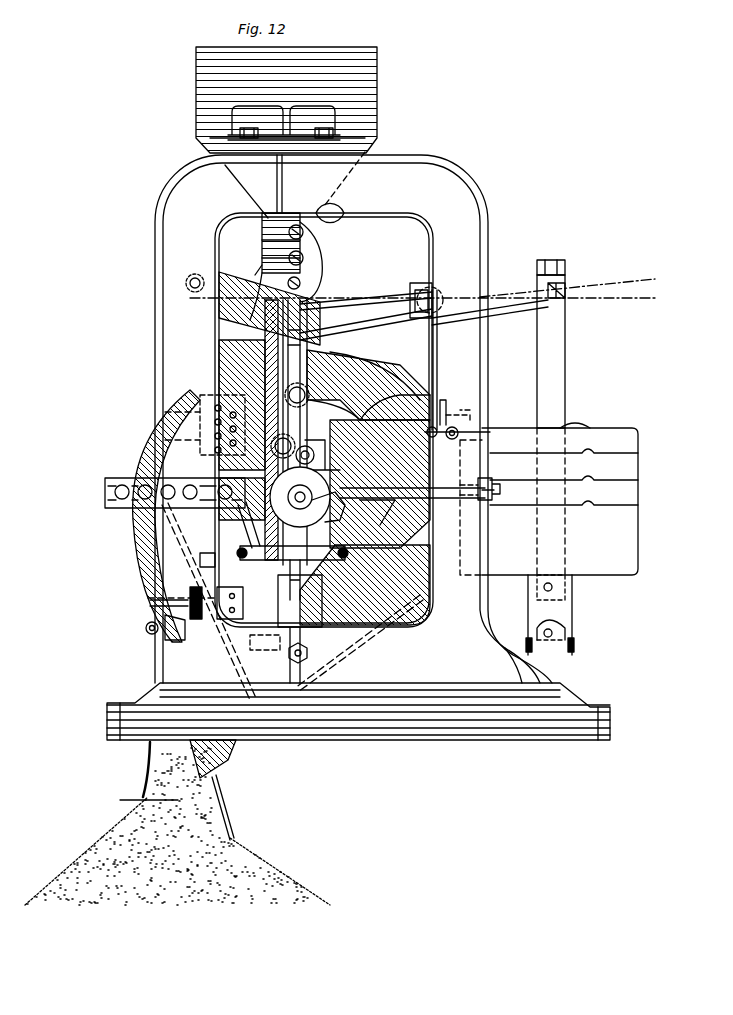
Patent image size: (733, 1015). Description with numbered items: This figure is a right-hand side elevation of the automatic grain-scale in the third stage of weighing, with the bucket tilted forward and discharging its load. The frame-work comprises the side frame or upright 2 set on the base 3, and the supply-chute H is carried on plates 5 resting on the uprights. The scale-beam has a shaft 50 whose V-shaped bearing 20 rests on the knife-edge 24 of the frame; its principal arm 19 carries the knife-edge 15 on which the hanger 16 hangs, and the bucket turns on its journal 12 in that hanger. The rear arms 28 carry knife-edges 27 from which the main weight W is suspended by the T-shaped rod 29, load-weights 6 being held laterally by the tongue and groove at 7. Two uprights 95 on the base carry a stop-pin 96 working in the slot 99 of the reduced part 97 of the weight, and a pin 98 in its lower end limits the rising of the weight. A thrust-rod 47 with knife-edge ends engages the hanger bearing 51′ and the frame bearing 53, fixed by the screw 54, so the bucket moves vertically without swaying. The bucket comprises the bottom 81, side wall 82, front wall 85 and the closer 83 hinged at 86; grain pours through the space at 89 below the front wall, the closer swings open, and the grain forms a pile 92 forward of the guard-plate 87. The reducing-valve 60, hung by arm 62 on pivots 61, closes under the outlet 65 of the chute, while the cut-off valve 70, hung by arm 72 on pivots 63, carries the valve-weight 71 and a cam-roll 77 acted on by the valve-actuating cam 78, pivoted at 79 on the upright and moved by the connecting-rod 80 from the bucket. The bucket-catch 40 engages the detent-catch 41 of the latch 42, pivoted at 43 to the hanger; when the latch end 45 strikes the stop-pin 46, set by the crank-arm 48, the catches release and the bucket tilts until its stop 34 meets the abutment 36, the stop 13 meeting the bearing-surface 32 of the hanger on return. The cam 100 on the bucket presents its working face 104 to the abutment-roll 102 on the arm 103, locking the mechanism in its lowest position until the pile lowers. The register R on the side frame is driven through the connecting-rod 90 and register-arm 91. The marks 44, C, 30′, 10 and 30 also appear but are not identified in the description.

The supply-chute H is at (352, 78).
The plate 5 is at (246, 138).
The side frame or upright 2 is at (183, 333).
The base 3 is at (430, 735).
The main weight W is at (562, 501).
The load-weight 6 is at (630, 498).
The tongue and groove 7 is at (590, 428).
The T-shaped rod 29 is at (556, 358).
The knife-edge 27 is at (560, 288).
The rear arm 28 is at (498, 316).
The V-shaped bearing 20 is at (418, 290).
The shaft 50 is at (440, 303).
The knife-edge 24 is at (436, 310).
The crank-arm 48 is at (443, 400).
The latch end 45 is at (462, 412).
The stop-pin 46 is at (460, 430).
The cam pivot 79 is at (192, 273).
The chute outlet 65 is at (280, 213).
The reducing-valve pivot 61 is at (270, 233).
The reducing-valve arm 62 is at (270, 255).
The reducing-valve 60 is at (258, 285).
The cut-off-valve pivot 63 is at (304, 258).
The valve-weight 71 is at (338, 224).
The cut-off-valve arm 72 is at (316, 268).
The cam-roll 77 is at (302, 284).
The cut-off valve 70 is at (340, 304).
The hanger 16 is at (310, 343).
The principal arm 19 is at (376, 325).
The valve-actuating cam 78 is at (258, 322).
The knife-edge 15 is at (296, 372).
The connecting-rod 80 is at (262, 362).
The abutment arm 103 is at (250, 400).
The bucket-catch 40 is at (273, 442).
The latch pivot 43 is at (297, 370).
The detent-catch 41 is at (345, 410).
The bucket-latch 42 is at (385, 392).
The cam body 44 is at (420, 432).
The thrust-rod 47 is at (395, 488).
The cam housing C is at (365, 585).
The bucket cam 100 is at (314, 455).
The abutment-roll 102 is at (318, 445).
The bucket journal 12 is at (300, 508).
The lever 51′ is at (338, 518).
The bucket stop 13 is at (370, 512).
The screw 54 is at (490, 480).
The V-shaped bearing 53 is at (486, 500).
The register R is at (196, 480).
The side wall 82 is at (150, 447).
The cam working face 104 is at (262, 478).
The register-arm 91 is at (238, 526).
The abutment 36 is at (205, 568).
The connecting-rod 90 is at (270, 562).
The rod 30′ is at (296, 562).
The bearing-surface 32 is at (306, 618).
The nut 10 is at (310, 655).
The rod 30 is at (262, 651).
The bucket stop 34 is at (150, 603).
The closer hinge 86 is at (146, 628).
The front wall 85 is at (206, 636).
The reduced part 97 is at (572, 590).
The slot 99 is at (566, 618).
The stop-pin 96 is at (560, 636).
The pin 98 is at (574, 645).
The stop upright 95 is at (528, 638).
The closer 83 is at (148, 765).
The bucket bottom 81 is at (236, 748).
The guard-plate 87 is at (224, 794).
The discharge space 89 is at (138, 799).
The pile of grain 92 is at (95, 843).